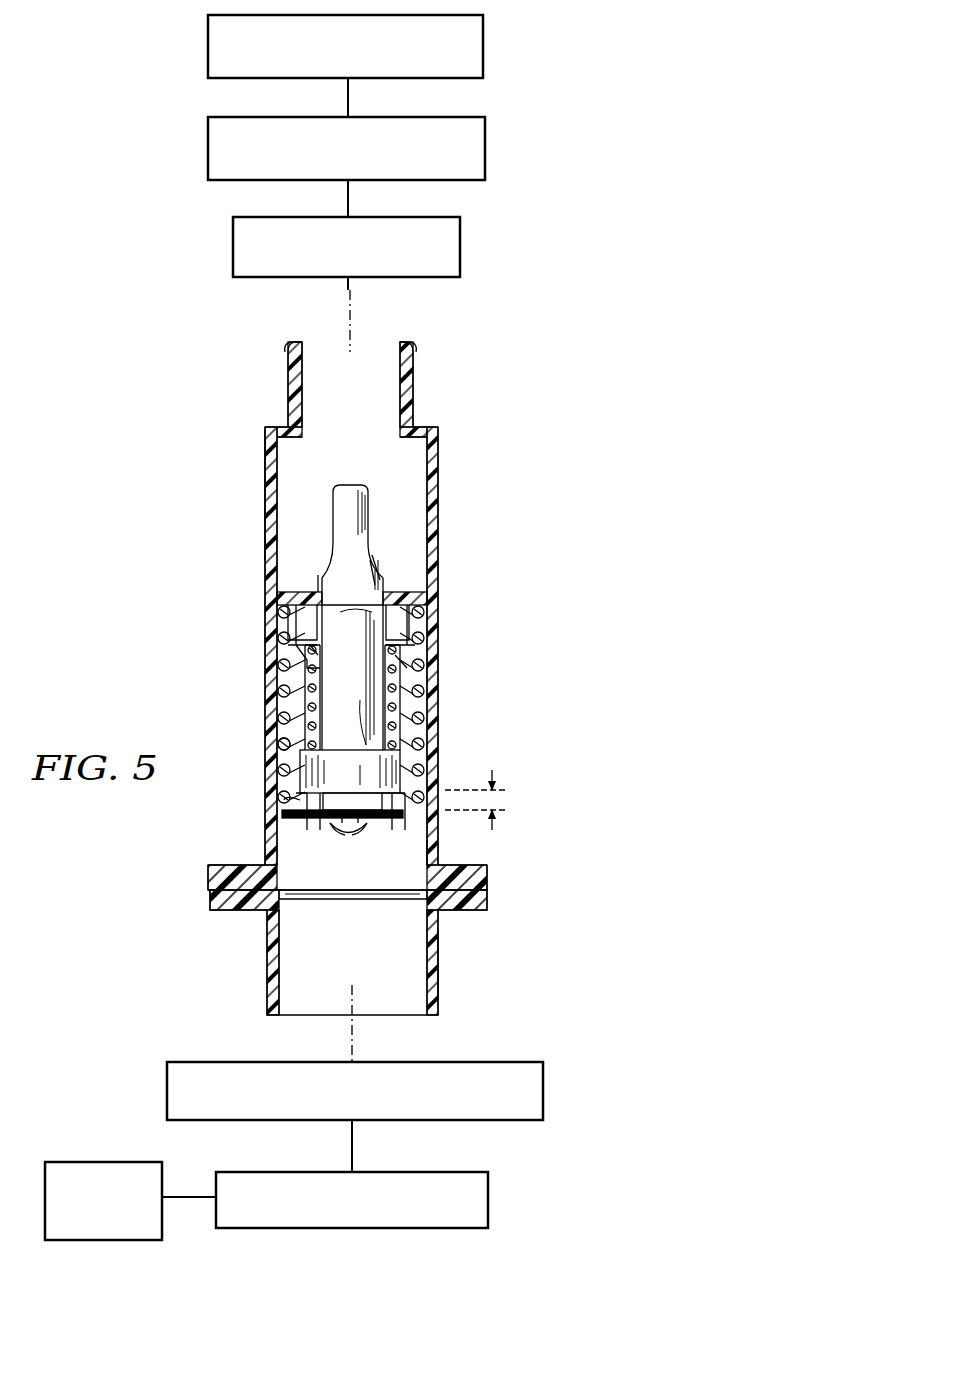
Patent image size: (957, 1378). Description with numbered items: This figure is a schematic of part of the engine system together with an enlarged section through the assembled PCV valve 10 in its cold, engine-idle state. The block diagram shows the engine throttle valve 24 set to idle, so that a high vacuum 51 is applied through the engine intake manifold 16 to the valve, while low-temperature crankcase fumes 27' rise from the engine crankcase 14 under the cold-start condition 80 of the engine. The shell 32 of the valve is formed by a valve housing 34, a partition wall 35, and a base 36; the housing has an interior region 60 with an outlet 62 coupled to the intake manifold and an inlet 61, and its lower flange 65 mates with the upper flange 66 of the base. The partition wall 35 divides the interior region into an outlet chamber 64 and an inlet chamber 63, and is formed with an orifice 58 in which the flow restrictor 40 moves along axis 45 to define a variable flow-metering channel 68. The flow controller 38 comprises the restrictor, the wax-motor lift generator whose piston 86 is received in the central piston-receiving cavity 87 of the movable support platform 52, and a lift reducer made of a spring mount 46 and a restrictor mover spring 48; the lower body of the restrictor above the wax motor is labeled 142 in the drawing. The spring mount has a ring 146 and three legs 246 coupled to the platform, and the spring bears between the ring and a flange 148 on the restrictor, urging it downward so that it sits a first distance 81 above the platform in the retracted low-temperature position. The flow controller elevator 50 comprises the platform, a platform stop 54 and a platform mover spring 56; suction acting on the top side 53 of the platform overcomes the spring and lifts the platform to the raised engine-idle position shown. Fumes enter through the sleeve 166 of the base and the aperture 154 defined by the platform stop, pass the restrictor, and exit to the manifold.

The engine throttle valve 24 is at (484, 52).
The engine intake manifold 16 is at (485, 149).
The high vacuum 51 is at (460, 248).
The axis 45 is at (352, 295).
The positive crankcase ventilation (PCV) valve 10 is at (562, 606).
The shell 32 is at (442, 457).
The valve housing 34 is at (261, 495).
The interior region 60 is at (325, 410).
The outlet 62 is at (392, 345).
The outlet chamber 64 is at (400, 461).
The partition wall 35 is at (300, 590).
The variable flow-metering channel 68 is at (310, 585).
The flow restrictor 40 is at (400, 646).
The flange 148 is at (351, 677).
The orifice 58 is at (383, 600).
The plunger flange 142 is at (350, 771).
The flow controller 38 is at (299, 630).
The ring 146 is at (312, 650).
The spring mount 46 is at (430, 632).
The legs 246 is at (434, 715).
The flow controller elevator 50 is at (291, 727).
The platform mover spring 56 is at (281, 747).
The restrictor mover spring 48 is at (394, 672).
The top side 53 is at (280, 793).
The piston 86 is at (347, 832).
The central piston-receiving cavity 87 is at (342, 832).
The movable support platform 52 is at (372, 837).
The inlet chamber 63 is at (291, 849).
The inlet 61 is at (434, 860).
The first distance 81 is at (493, 781).
The lower flange 65 is at (471, 870).
The upper flange 66 is at (471, 906).
The platform stop 54 is at (290, 893).
The aperture 154 is at (410, 894).
The base 36 is at (261, 961).
The sleeve 166 is at (440, 975).
The low-temperature crankcase fumes 27' is at (390, 1082).
The engine crankcase 14 is at (490, 1202).
The cold-start condition 80 is at (103, 1166).